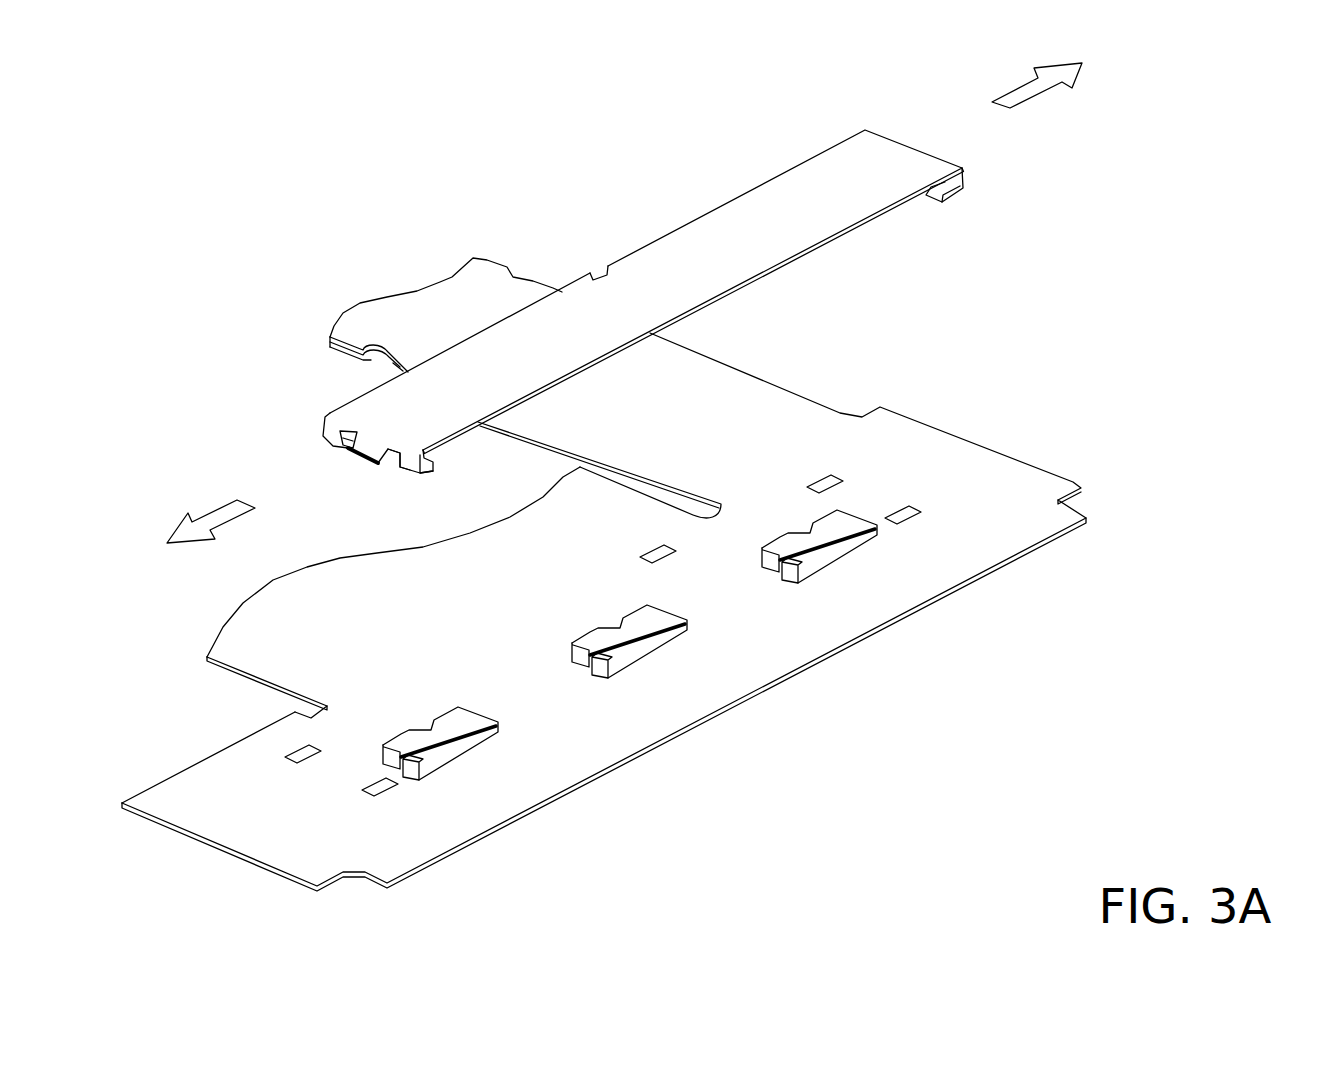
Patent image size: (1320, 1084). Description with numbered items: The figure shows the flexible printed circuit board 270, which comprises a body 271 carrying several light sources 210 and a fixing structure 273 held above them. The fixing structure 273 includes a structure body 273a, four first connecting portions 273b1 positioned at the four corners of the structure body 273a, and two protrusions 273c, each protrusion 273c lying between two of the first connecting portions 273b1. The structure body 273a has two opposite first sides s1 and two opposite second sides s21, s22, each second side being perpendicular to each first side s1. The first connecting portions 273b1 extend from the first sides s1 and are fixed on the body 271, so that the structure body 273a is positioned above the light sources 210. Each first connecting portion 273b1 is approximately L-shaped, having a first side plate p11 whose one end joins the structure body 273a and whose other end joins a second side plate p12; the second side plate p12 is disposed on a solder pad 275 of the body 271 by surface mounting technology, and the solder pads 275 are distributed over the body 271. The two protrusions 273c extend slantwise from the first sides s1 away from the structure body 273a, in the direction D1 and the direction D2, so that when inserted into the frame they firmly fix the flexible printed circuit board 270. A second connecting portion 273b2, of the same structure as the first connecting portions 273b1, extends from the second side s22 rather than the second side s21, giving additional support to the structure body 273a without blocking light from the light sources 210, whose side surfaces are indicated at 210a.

The flexible printed circuit board 270 is at (1250, 89).
The body 271 is at (923, 583).
The fixing structure 273 is at (692, 172).
The structure body 273a is at (673, 255).
The first connecting portion 273b1 is at (323, 450).
The second connecting portion 273b2 is at (600, 267).
The protrusion 273c is at (358, 460).
The solder pad 275 is at (292, 750).
The light source 210 is at (787, 545).
The side surface of electronic component 210a is at (812, 565).
The first side plate p11 is at (423, 472).
The second side plate p12 is at (425, 472).
The first side s1 is at (910, 140).
The second side s21 is at (887, 215).
The second side s22 is at (785, 168).
The direction D1 is at (202, 507).
The direction D2 is at (1018, 82).